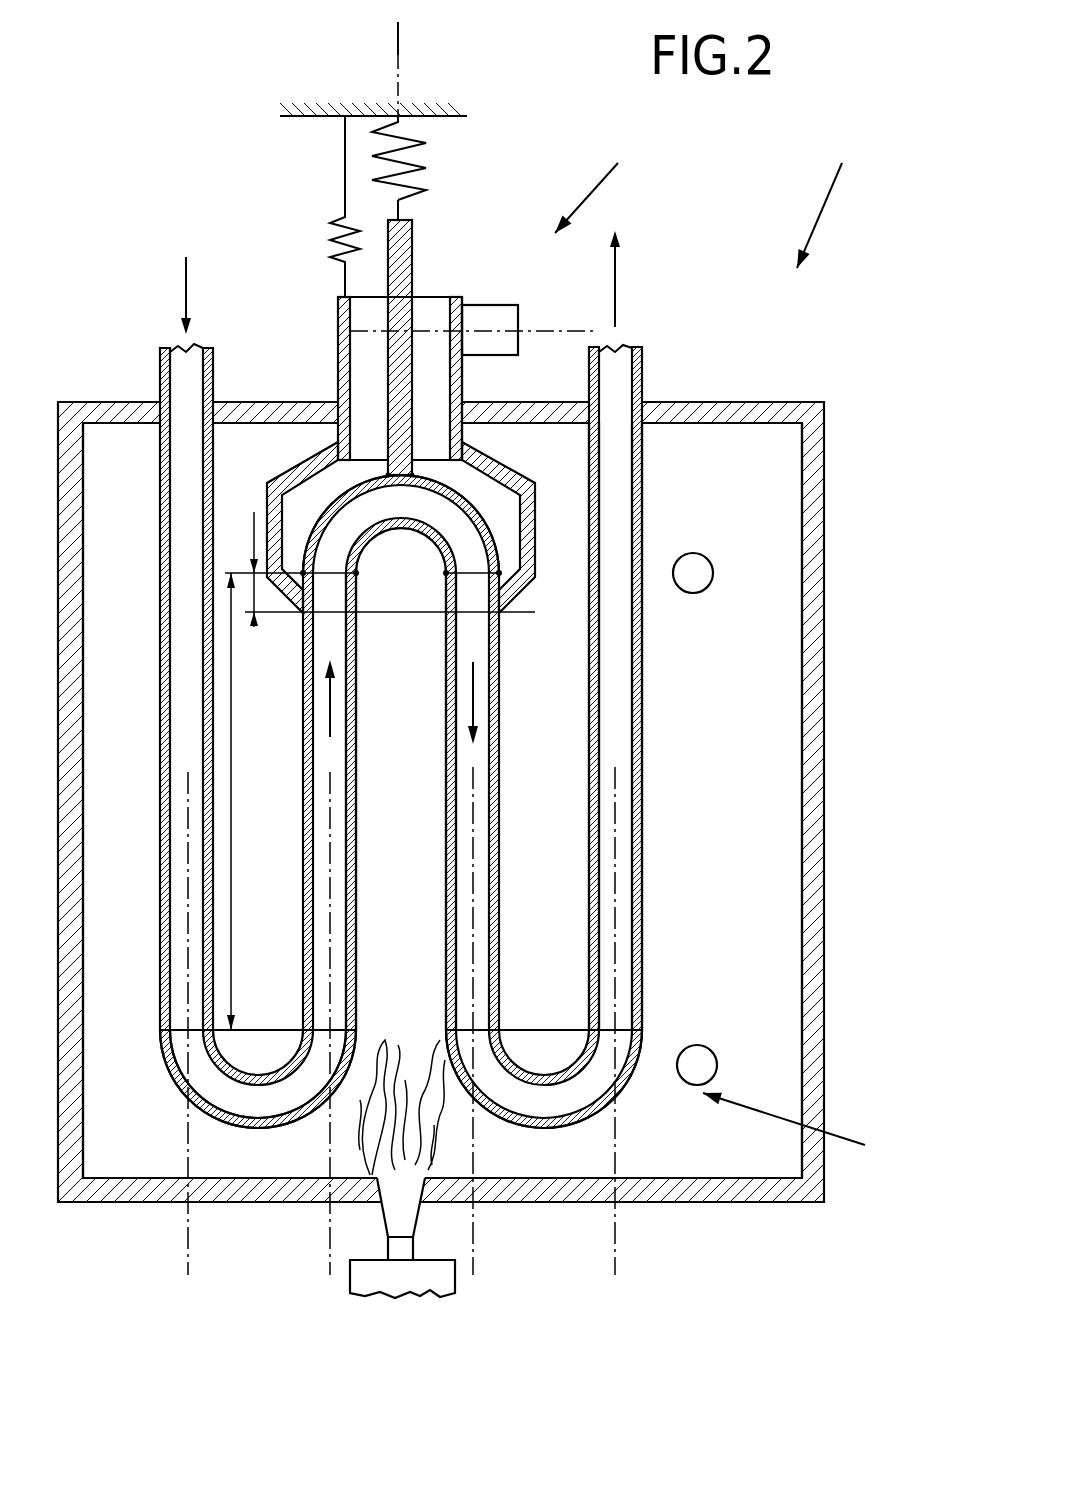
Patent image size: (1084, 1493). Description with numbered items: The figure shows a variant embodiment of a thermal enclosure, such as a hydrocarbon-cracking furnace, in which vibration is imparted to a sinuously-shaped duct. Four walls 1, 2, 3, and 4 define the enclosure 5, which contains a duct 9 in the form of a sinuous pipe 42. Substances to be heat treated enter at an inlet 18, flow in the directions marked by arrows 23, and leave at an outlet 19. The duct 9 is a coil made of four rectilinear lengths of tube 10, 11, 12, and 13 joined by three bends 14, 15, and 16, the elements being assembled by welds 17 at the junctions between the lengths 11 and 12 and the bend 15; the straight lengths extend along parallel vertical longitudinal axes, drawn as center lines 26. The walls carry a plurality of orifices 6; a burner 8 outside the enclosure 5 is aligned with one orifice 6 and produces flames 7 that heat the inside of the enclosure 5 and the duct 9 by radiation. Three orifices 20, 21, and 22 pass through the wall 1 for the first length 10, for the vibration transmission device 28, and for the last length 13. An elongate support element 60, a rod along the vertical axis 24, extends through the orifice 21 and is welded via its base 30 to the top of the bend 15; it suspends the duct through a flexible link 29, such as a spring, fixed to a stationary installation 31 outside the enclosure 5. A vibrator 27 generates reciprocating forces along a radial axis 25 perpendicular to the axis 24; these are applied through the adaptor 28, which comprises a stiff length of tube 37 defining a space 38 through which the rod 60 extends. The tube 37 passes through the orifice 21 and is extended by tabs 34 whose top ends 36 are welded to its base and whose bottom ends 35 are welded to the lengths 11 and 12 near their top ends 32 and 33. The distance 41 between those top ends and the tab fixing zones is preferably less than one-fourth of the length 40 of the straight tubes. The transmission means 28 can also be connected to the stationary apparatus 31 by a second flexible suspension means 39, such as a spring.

The wall 1 is at (740, 413).
The wall 2 is at (812, 467).
The wall 3 is at (762, 1190).
The wall 4 is at (73, 745).
The enclosure 5 is at (860, 163).
The orifices 6 is at (698, 570).
The flames 7 is at (380, 1090).
The burner 8 is at (405, 1280).
The duct 9 is at (882, 1145).
The rectilinear length of tube 10 is at (160, 892).
The rectilinear length of tube 11 is at (355, 933).
The rectilinear length of tube 12 is at (448, 880).
The rectilinear length of tube 13 is at (638, 758).
The bend 14 is at (245, 1128).
The bend 15 is at (493, 535).
The bend 16 is at (527, 1128).
The welds 17 is at (414, 591).
The inlet 18 is at (183, 397).
The outlet 19 is at (615, 392).
The orifice 20 is at (223, 402).
The orifice 21 is at (330, 407).
The orifice 22 is at (655, 413).
The arrows 23 is at (187, 285).
The vertical axis 24 is at (397, 50).
The radial axis 25 is at (558, 331).
The tube center lines 26 is at (188, 1265).
The vibrator 27 is at (482, 317).
The device for transmitting vibration 28 is at (652, 163).
The flexible link 29 is at (427, 155).
The base 30 is at (289, 470).
The stationary installation 31 is at (360, 107).
The top end 32 is at (348, 637).
The top end 33 is at (447, 615).
The tabs 34 is at (578, 480).
The bottom ends 35 is at (284, 602).
The top ends 36 is at (545, 453).
The length of tube 37 is at (460, 383).
The space 38 is at (367, 317).
The second flexible suspension means 39 is at (328, 230).
The length 40 is at (231, 737).
The distance 41 is at (253, 542).
The sinuous pipe 42 is at (197, 1073).
The elongate element 60 is at (403, 235).